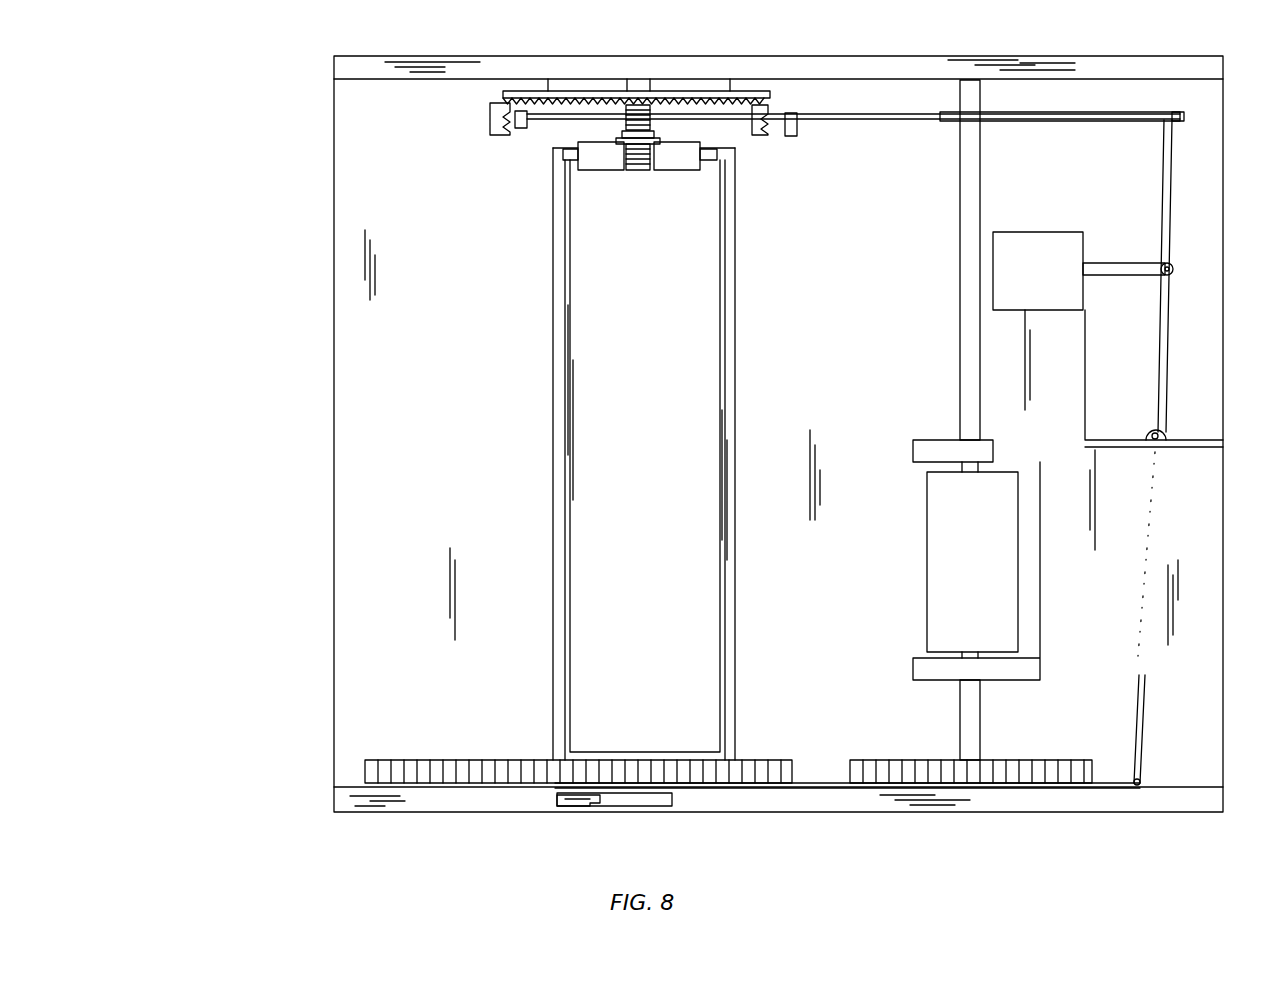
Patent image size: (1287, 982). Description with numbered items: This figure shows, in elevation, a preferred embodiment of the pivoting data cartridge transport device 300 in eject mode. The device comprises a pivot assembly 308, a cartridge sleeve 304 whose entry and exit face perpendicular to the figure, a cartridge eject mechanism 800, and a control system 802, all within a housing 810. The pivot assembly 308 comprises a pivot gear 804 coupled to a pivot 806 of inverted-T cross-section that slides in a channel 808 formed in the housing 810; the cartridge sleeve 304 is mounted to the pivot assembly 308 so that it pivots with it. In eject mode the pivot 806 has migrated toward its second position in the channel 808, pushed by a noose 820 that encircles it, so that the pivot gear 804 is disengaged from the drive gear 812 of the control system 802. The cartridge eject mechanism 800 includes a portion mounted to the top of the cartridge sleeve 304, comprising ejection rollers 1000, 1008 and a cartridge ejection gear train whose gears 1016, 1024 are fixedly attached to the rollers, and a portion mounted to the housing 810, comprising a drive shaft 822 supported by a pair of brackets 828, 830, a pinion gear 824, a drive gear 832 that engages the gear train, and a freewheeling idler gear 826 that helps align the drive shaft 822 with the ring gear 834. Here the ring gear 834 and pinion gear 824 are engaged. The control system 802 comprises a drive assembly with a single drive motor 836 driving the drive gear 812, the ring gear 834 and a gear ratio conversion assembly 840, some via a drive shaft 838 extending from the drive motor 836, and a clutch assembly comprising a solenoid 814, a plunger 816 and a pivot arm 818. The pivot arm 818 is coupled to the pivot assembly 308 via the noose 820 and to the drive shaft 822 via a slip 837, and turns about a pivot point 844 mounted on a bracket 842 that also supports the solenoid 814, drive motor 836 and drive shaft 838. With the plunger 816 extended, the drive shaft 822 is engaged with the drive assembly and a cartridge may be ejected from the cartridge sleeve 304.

The pivoting data cartridge transport device 300 is at (262, 325).
The cartridge sleeve 304 is at (567, 510).
The pivot assembly 308 is at (540, 807).
The cartridge eject mechanism 800 is at (575, 185).
The control system 802 is at (900, 420).
The pivot gear 804 is at (755, 760).
The pivot 806 is at (584, 806).
The channel 808 is at (630, 806).
The housing 810 is at (336, 630).
The drive gear 812 is at (1065, 760).
The solenoid 814 is at (1058, 282).
The plunger 816 is at (1108, 263).
The pivot arm 818 is at (1168, 178).
The noose 820 is at (850, 760).
The drive shaft 822 is at (890, 122).
The pinion gear 824 is at (502, 138).
The idler gear 826 is at (761, 140).
The bracket 828 is at (522, 132).
The bracket 830 is at (793, 140).
The drive gear 832 is at (657, 122).
The ring gear 834 is at (533, 93).
The drive motor 836 is at (995, 567).
The slip 837 is at (892, 124).
The drive shaft 838 is at (960, 350).
The gear ratio conversion assembly 840 is at (990, 110).
The bracket 842 is at (1185, 438).
The pivot point 844 is at (1152, 434).
The ejection roller 1000 is at (606, 173).
The ejection roller 1008 is at (690, 172).
The cartridge ejection gear train gear 1016 is at (636, 173).
The cartridge ejection gear train gear 1024 is at (636, 132).